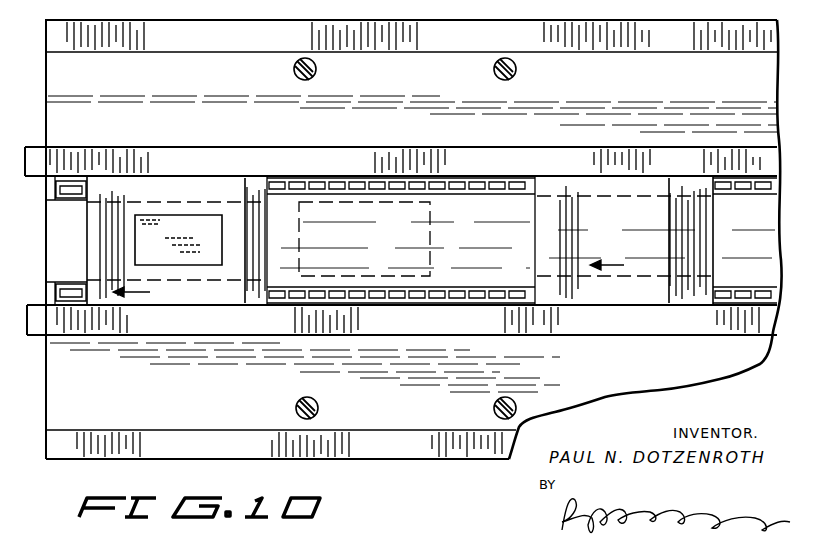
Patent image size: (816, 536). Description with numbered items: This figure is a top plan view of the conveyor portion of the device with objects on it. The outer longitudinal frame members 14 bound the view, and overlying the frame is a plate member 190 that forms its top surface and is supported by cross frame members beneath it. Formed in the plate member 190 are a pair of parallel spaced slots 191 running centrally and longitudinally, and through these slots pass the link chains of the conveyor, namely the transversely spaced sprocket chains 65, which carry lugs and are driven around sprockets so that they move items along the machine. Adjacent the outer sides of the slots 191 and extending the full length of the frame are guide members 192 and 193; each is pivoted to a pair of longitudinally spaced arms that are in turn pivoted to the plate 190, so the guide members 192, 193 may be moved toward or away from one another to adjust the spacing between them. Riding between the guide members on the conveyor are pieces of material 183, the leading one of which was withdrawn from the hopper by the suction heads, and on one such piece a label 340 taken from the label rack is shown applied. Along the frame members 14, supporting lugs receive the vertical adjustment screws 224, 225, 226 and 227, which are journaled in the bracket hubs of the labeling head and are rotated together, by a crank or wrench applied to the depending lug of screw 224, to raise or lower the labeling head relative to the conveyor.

The frame members 14 is at (170, 48).
The plate member 190 is at (750, 82).
The guide member 193 is at (617, 152).
The guide member 192 is at (660, 323).
The slots 191 is at (502, 285).
The sprocket chains 65 is at (488, 182).
The material 183 is at (646, 248).
The labels 340 is at (185, 212).
The vertical adjustment screw 227 is at (312, 79).
The vertical adjustment screw 226 is at (517, 73).
The vertical adjustment screw 224 is at (318, 406).
The vertical adjustment screw 225 is at (513, 399).